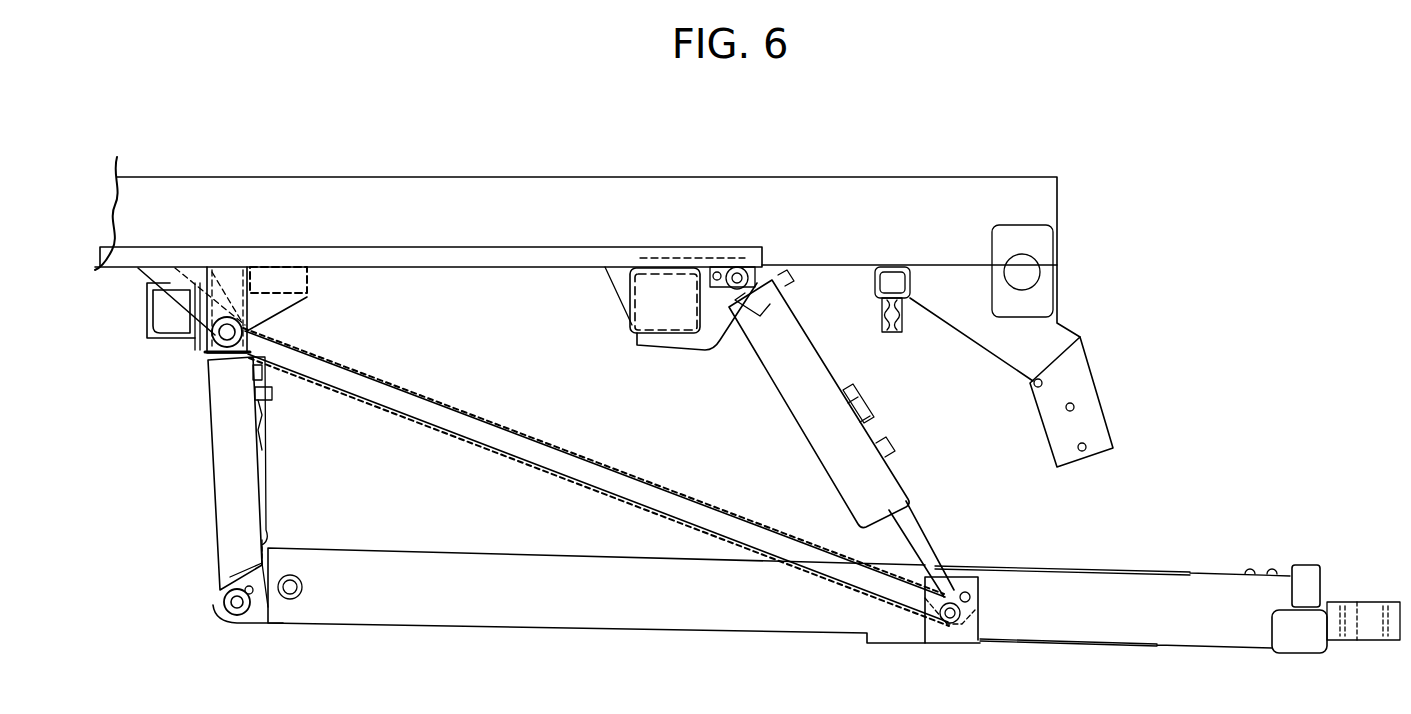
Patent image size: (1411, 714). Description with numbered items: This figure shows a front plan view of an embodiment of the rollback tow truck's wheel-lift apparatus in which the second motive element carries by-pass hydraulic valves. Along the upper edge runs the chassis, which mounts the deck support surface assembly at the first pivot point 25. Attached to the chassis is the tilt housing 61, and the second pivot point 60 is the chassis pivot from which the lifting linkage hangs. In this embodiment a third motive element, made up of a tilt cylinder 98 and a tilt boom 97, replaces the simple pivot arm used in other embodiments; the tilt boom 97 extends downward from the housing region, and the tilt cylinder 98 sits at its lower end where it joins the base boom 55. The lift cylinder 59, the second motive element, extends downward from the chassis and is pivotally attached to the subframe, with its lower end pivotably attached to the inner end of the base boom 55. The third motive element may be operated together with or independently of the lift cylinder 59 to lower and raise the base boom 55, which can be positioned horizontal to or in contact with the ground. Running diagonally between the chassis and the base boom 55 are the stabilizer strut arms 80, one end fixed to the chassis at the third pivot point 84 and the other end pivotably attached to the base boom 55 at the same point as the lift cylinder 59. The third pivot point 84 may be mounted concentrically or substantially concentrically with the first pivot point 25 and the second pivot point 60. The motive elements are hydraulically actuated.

The first pivot point 25 is at (210, 363).
The base boom 55 is at (657, 629).
The lift cylinder 59 is at (878, 449).
The second pivot point 60 is at (272, 392).
The tilt housing 61 is at (207, 360).
The stabilizer strut arms 80 is at (580, 485).
The third pivot point 84 is at (273, 335).
The tilt boom 97 is at (215, 538).
The tilt cylinder 98 is at (217, 593).